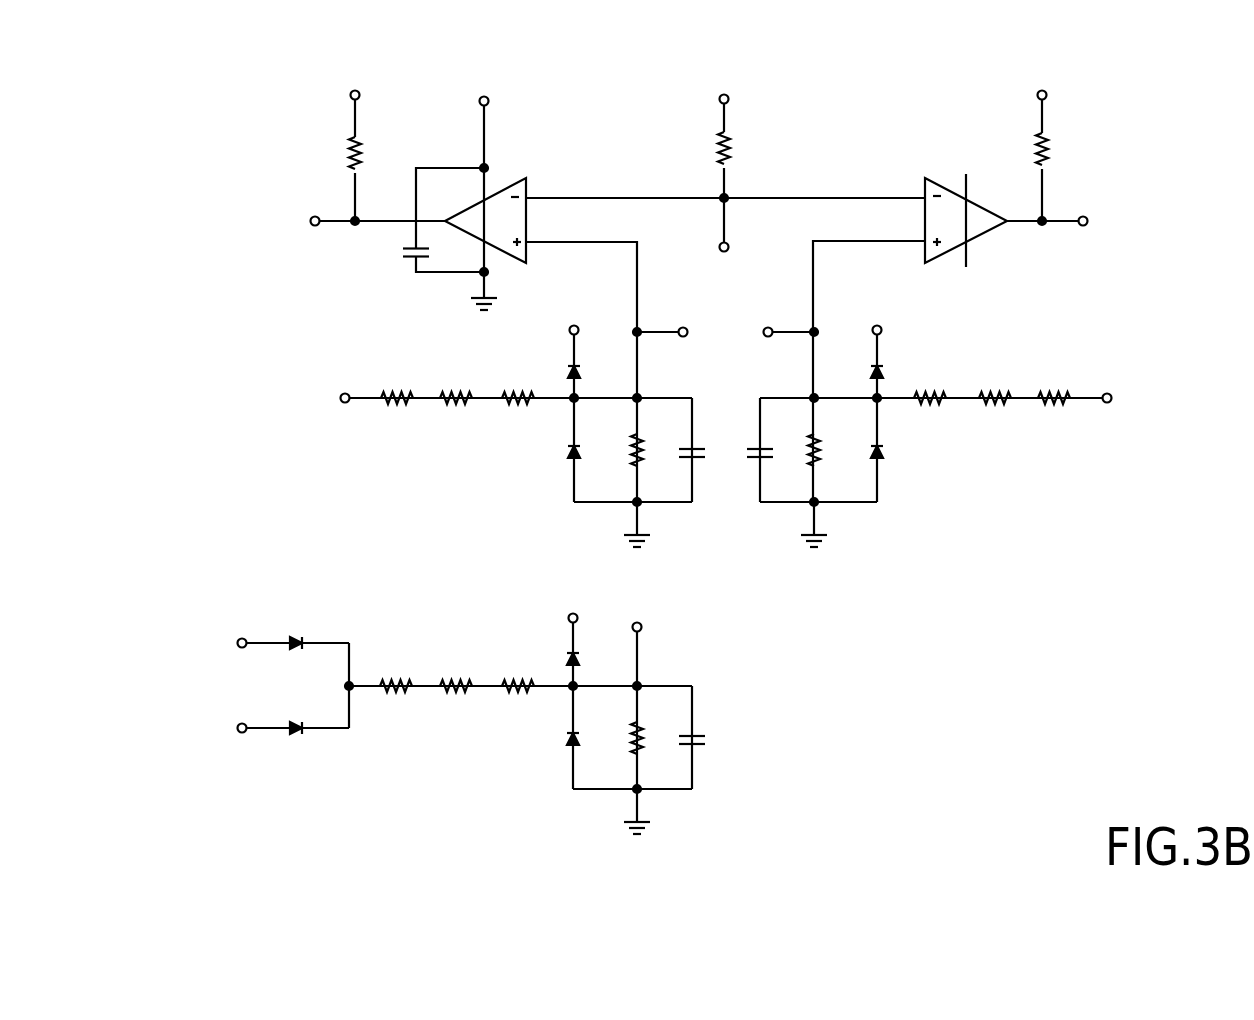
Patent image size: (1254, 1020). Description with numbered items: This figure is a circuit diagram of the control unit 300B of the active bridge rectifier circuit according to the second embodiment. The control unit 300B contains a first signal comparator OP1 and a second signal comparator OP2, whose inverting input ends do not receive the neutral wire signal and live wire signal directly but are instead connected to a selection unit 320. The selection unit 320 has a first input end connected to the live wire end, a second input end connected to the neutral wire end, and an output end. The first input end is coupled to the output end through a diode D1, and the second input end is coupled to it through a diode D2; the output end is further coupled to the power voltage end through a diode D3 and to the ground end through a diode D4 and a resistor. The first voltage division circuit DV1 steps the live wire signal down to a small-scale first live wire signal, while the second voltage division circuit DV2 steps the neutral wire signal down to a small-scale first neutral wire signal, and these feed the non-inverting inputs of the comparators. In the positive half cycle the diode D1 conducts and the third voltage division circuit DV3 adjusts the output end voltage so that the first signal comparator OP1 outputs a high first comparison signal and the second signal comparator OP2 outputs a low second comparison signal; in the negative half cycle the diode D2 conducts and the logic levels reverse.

The control unit 300B is at (850, 59).
The selection unit 320 is at (350, 597).
The first signal comparator OP1 is at (502, 205).
The second signal comparator OP2 is at (952, 210).
The diode D1 is at (300, 626).
The diode D2 is at (300, 749).
The diode D3 is at (557, 649).
The diode D4 is at (557, 748).
The first voltage division circuit DV1 is at (457, 375).
The second voltage division circuit DV2 is at (992, 375).
The third voltage division circuit DV3 is at (457, 665).